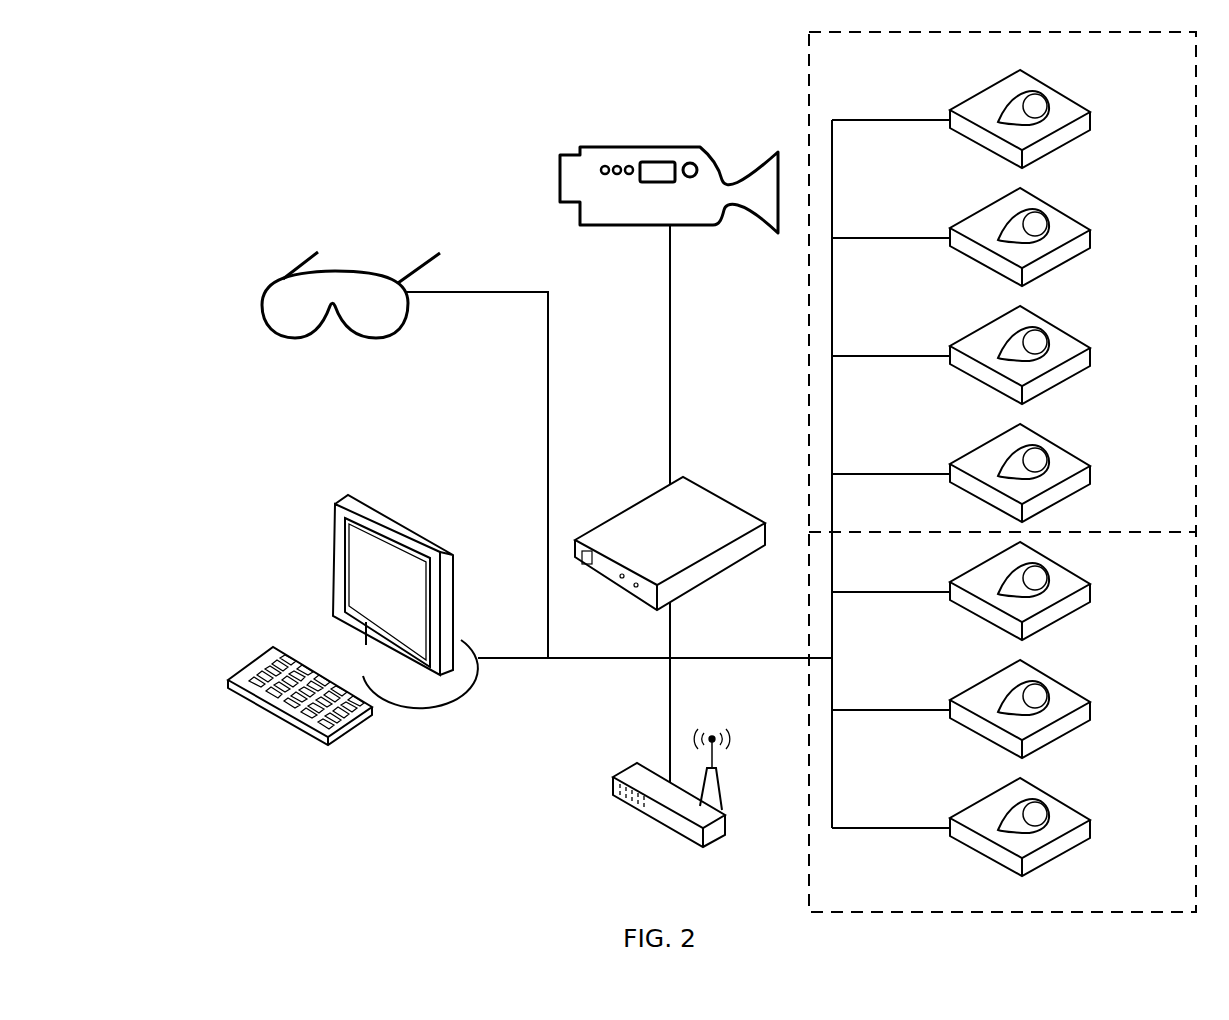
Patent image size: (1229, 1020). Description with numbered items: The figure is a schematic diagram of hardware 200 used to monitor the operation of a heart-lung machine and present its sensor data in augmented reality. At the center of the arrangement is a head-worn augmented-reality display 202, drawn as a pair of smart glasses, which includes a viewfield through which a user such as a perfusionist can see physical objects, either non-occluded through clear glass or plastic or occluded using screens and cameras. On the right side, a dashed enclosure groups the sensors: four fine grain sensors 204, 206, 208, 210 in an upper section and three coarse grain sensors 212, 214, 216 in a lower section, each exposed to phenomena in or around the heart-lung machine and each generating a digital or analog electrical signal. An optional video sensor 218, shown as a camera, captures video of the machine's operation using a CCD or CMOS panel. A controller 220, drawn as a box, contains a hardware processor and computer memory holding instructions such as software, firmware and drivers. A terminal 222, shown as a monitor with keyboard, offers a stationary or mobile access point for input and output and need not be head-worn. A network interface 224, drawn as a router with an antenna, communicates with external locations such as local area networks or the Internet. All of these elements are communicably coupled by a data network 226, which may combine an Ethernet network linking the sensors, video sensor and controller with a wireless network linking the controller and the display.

The hardware 200 is at (188, 126).
The head-worn augmented-reality display 202 is at (262, 304).
The sensor 204 is at (1095, 120).
The sensor 206 is at (1095, 238).
The sensor 208 is at (1095, 356).
The sensor 210 is at (1095, 474).
The sensor 212 is at (1095, 592).
The sensor 214 is at (1095, 710).
The sensor 216 is at (1095, 828).
The video sensor 218 is at (620, 147).
The controller 220 is at (631, 506).
The terminal 222 is at (334, 503).
The network interface 224 is at (613, 780).
The data network 226 is at (600, 661).